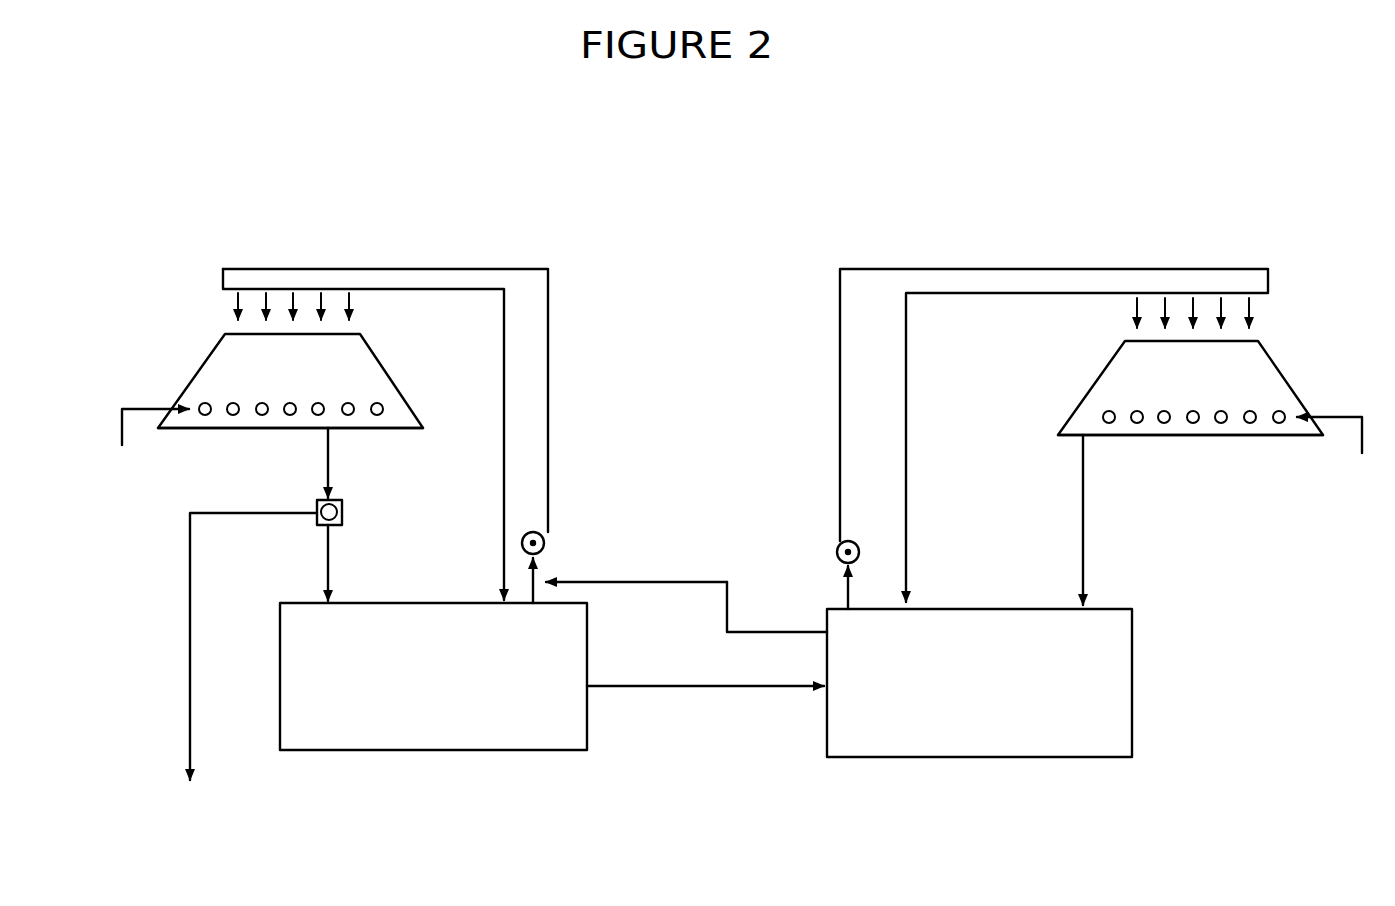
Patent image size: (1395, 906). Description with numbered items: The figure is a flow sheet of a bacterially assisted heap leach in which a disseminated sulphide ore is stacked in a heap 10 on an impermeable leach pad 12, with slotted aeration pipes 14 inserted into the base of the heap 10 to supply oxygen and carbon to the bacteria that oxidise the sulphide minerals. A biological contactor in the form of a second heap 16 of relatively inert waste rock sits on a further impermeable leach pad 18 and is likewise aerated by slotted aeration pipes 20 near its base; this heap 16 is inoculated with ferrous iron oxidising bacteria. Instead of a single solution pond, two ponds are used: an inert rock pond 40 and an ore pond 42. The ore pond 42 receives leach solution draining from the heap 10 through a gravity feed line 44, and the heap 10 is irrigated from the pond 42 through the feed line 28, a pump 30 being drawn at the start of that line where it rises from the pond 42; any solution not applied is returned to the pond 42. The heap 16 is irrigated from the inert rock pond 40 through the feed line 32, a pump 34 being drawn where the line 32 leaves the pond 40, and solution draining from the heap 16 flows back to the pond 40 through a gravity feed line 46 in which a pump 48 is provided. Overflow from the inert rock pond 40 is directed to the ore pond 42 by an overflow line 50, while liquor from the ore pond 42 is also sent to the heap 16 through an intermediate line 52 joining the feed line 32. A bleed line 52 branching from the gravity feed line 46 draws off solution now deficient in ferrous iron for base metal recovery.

The heap 10 is at (1286, 369).
The impermeable leach pad 12 is at (1150, 436).
The slotted aeration pipes 14 is at (1250, 423).
The second heap 16 is at (201, 365).
The further impermeable leach pad 18 is at (373, 430).
The slotted aeration pipes 20 is at (233, 416).
The feed line 28 is at (1000, 269).
The ore pond pump 30 is at (838, 545).
The feed line 32 is at (412, 269).
The inert rock pond pump 34 is at (548, 542).
The inert rock pond 40 is at (527, 751).
The ore pond 42 is at (1132, 687).
The gravity feed line 44 is at (1083, 552).
The gravity feed line 46 is at (323, 465).
The pump 48 is at (320, 523).
The overflow line 50 is at (693, 687).
The bleed line 52 is at (188, 657).